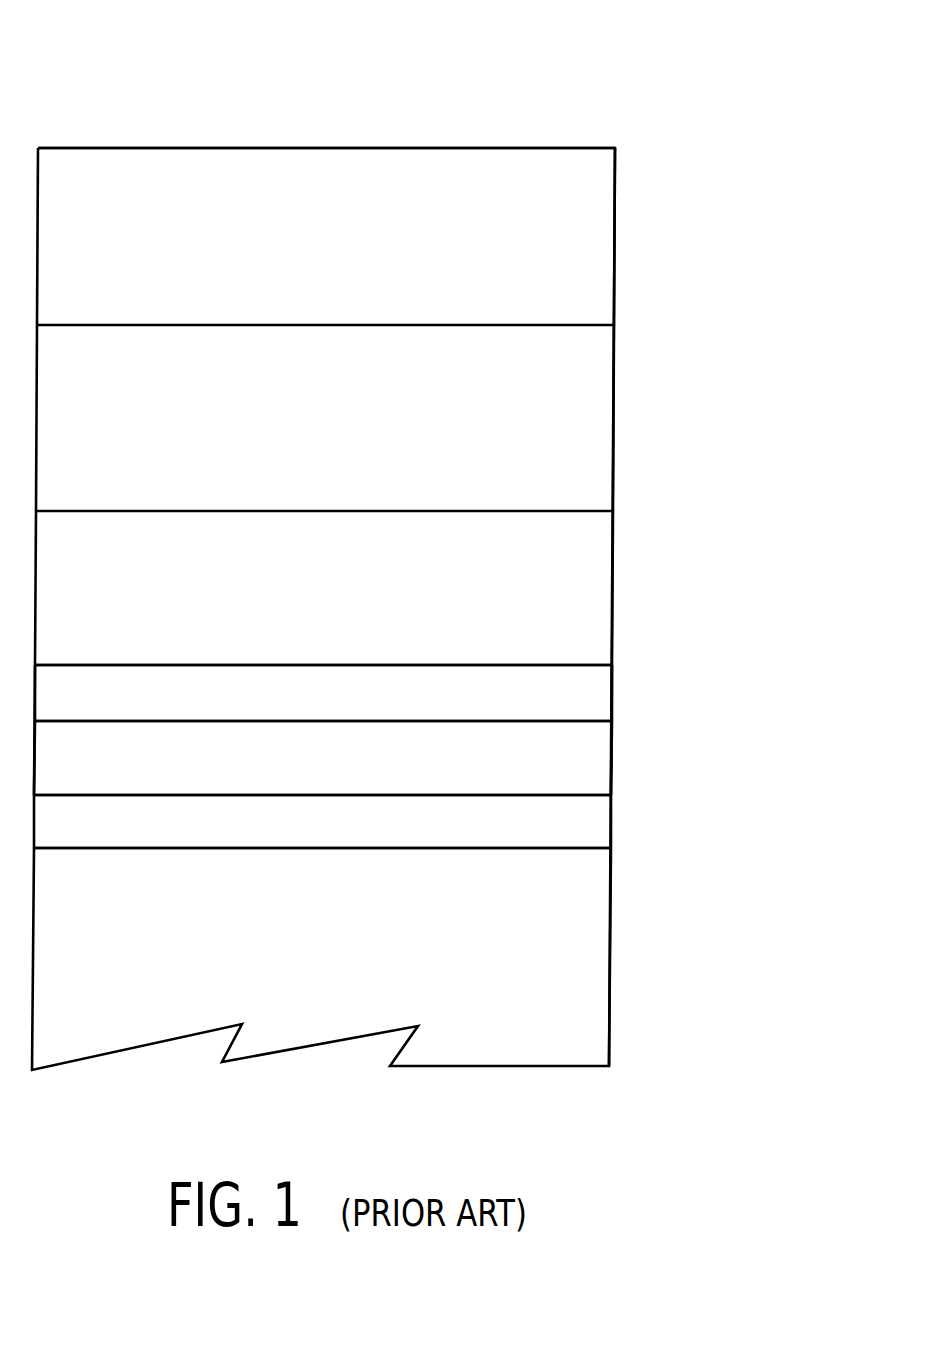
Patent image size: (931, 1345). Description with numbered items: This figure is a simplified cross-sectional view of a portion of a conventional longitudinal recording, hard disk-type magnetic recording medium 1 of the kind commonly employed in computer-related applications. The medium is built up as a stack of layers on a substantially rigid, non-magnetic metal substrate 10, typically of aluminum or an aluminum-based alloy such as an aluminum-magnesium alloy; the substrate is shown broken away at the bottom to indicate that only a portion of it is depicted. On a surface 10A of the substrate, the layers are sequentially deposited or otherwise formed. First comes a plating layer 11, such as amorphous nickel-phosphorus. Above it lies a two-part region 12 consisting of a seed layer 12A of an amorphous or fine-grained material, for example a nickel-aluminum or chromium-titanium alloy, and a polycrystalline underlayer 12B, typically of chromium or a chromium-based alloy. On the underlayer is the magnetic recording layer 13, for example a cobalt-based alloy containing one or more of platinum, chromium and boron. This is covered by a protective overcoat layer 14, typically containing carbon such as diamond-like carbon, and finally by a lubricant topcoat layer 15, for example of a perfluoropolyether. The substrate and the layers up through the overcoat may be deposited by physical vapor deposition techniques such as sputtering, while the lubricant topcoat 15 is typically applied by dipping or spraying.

The magnetic recording medium 1 is at (494, 118).
The non-magnetic metal substrate 10 is at (613, 967).
The surface 10A is at (388, 880).
The plating layer 11 is at (614, 818).
The seed layer and underlayer 12 is at (427, 729).
The seed layer 12A is at (616, 749).
The polycrystalline underlayer 12B is at (616, 688).
The magnetic recording layer 13 is at (616, 580).
The protective overcoat layer 14 is at (616, 408).
The lubricant topcoat layer 15 is at (618, 232).